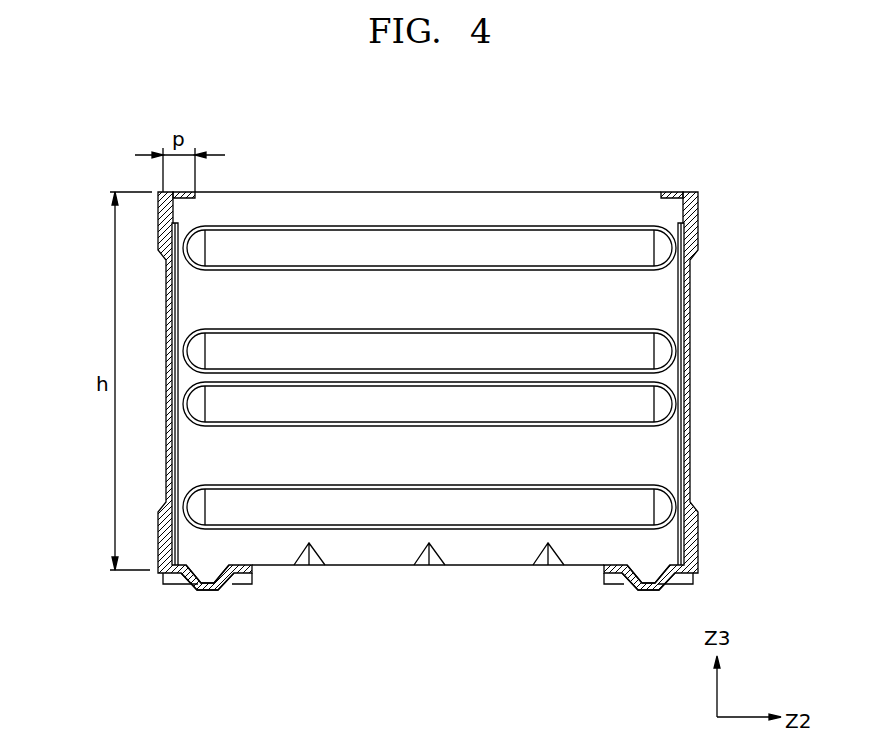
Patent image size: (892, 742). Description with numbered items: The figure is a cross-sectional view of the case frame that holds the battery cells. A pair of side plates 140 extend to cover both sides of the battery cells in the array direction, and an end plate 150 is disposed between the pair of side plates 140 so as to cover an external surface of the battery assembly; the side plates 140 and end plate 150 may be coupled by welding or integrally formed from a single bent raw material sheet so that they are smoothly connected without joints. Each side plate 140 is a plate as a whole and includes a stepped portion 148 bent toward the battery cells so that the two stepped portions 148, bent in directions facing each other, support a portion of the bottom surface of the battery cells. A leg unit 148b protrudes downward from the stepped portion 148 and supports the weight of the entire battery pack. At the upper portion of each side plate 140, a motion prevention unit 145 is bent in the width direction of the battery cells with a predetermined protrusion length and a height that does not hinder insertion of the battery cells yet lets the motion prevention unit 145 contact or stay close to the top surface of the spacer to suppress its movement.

The side plate 140 is at (172, 349).
The motion prevention unit 145 is at (190, 191).
The stepped portion 148 is at (238, 582).
The leg unit 148b is at (207, 590).
The end plate 150 is at (428, 208).